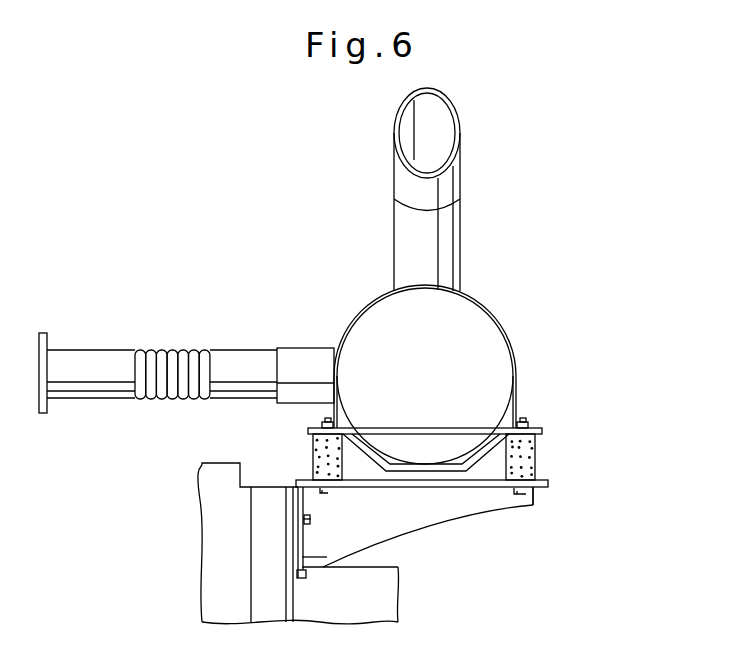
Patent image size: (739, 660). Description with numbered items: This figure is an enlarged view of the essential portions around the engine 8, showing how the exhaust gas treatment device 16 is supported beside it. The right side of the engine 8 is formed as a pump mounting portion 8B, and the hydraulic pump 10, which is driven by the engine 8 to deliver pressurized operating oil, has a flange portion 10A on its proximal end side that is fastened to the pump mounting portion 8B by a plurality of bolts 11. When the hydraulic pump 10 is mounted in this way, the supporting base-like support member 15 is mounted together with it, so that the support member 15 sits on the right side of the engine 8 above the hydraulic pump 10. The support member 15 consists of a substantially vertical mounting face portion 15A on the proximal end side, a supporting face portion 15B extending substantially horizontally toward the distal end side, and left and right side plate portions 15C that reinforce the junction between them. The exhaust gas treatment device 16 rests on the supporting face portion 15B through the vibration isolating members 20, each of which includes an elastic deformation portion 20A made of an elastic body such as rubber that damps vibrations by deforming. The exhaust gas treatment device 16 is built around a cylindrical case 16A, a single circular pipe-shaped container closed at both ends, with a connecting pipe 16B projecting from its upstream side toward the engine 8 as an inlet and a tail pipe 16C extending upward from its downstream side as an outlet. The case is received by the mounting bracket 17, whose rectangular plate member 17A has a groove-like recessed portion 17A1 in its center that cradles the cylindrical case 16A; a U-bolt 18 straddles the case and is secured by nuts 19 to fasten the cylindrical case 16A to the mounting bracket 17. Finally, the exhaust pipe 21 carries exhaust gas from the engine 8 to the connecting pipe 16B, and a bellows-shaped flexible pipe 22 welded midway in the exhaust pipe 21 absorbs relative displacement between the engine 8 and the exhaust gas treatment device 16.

The engine 8 is at (219, 547).
The pump mounting portion 8B is at (278, 597).
The hydraulic pump 10 is at (298, 564).
The flange portion 10A is at (293, 530).
The bolts 11 is at (307, 518).
The support member 15 is at (455, 533).
The mounting face portion 15A is at (303, 547).
The supporting face portion 15B is at (472, 460).
The side plate portions 15C is at (370, 520).
The exhaust gas treatment device 16 is at (405, 276).
The cylindrical case 16A is at (382, 335).
The connecting pipe 16B is at (302, 360).
The tail pipe 16C is at (448, 187).
The mounting bracket 17 is at (471, 397).
The plate member 17A is at (534, 494).
The recessed portion 17A1 is at (423, 462).
The U-bolt 18 is at (498, 313).
The nut 19 is at (528, 418).
The vibration isolating members 20 is at (388, 449).
The elastic deformation portion 20A is at (323, 448).
The exhaust pipe 21 is at (88, 367).
The flexible pipe 22 is at (175, 367).